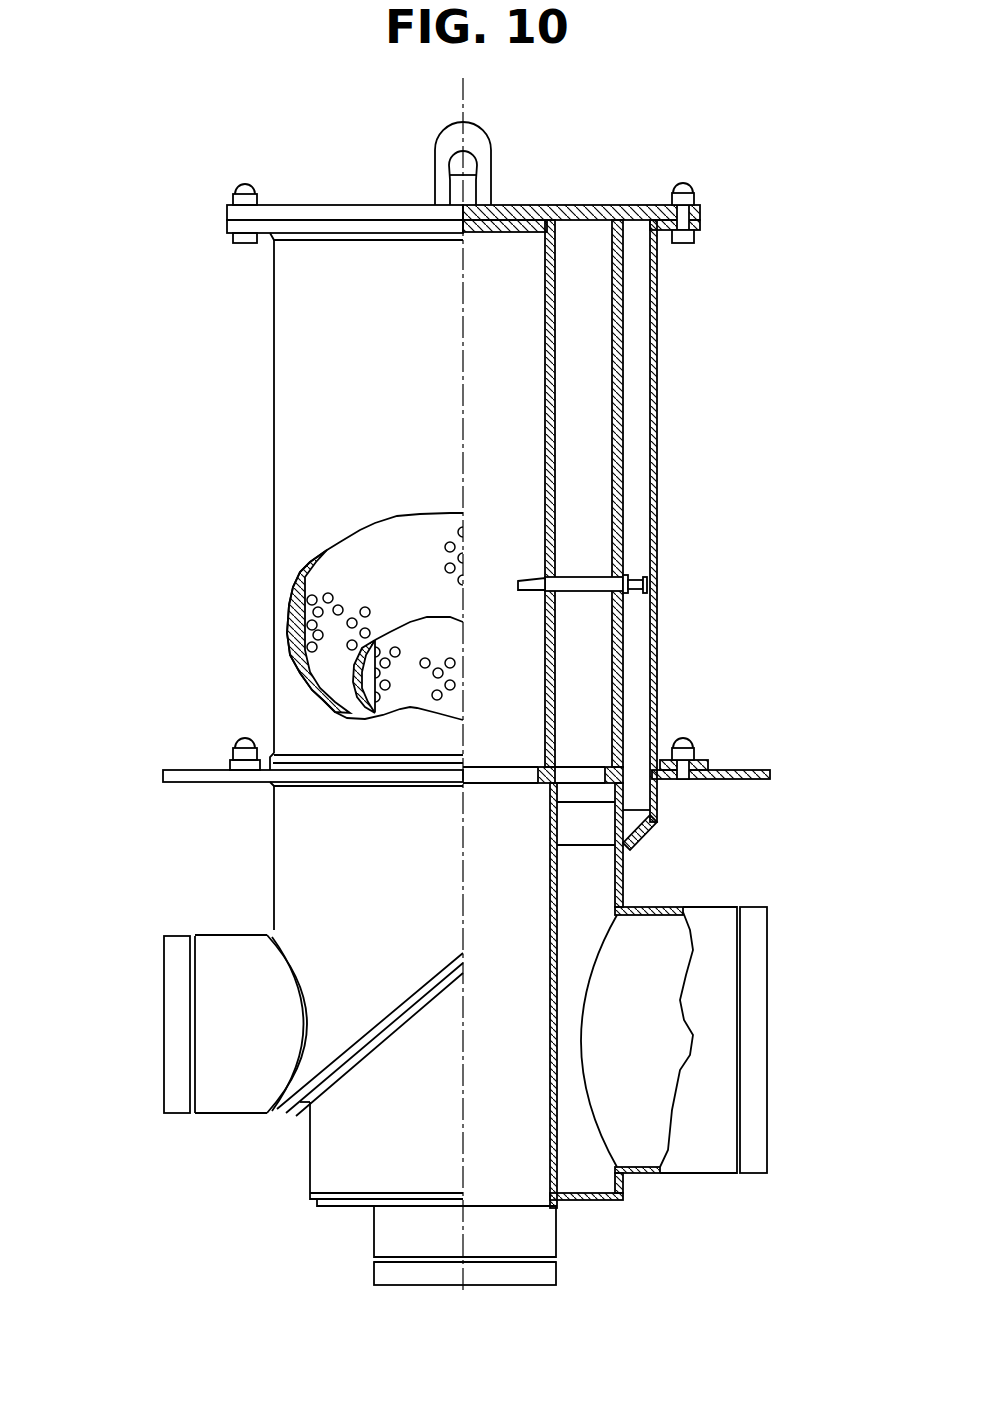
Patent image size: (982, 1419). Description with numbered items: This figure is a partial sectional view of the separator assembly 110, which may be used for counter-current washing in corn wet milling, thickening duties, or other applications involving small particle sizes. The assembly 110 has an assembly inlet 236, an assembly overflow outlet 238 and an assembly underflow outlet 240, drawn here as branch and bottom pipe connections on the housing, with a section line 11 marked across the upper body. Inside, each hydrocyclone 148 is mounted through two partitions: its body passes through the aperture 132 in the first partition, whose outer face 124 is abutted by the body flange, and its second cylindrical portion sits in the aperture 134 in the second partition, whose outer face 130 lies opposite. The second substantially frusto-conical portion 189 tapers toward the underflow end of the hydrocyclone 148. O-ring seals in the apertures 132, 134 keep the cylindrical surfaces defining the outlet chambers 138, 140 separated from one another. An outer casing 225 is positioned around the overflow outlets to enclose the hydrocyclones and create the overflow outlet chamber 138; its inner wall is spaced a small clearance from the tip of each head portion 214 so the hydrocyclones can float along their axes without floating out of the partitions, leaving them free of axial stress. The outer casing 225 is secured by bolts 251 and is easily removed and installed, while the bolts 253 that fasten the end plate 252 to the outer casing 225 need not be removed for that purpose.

The separator assembly 110 is at (258, 323).
The outer casing 225 is at (372, 384).
The outlet chamber 140 is at (483, 342).
The outer face 124 is at (333, 562).
The outer face 130 is at (408, 640).
The aperture 134 is at (545, 515).
The aperture 132 is at (612, 470).
The overflow outlet chamber 138 is at (640, 366).
The hydrocyclone 148 is at (590, 592).
The second substantially frusto-conical portion 189 is at (520, 593).
The head portion 214 is at (645, 575).
The end plate 252 is at (525, 205).
The bolt 253 is at (690, 207).
The bolt 251 is at (683, 780).
The assembly inlet 236 is at (767, 1020).
The assembly overflow outlet 238 is at (163, 1017).
The assembly underflow outlet 240 is at (430, 1287).
The section line 11- 11 is at (240, 487).